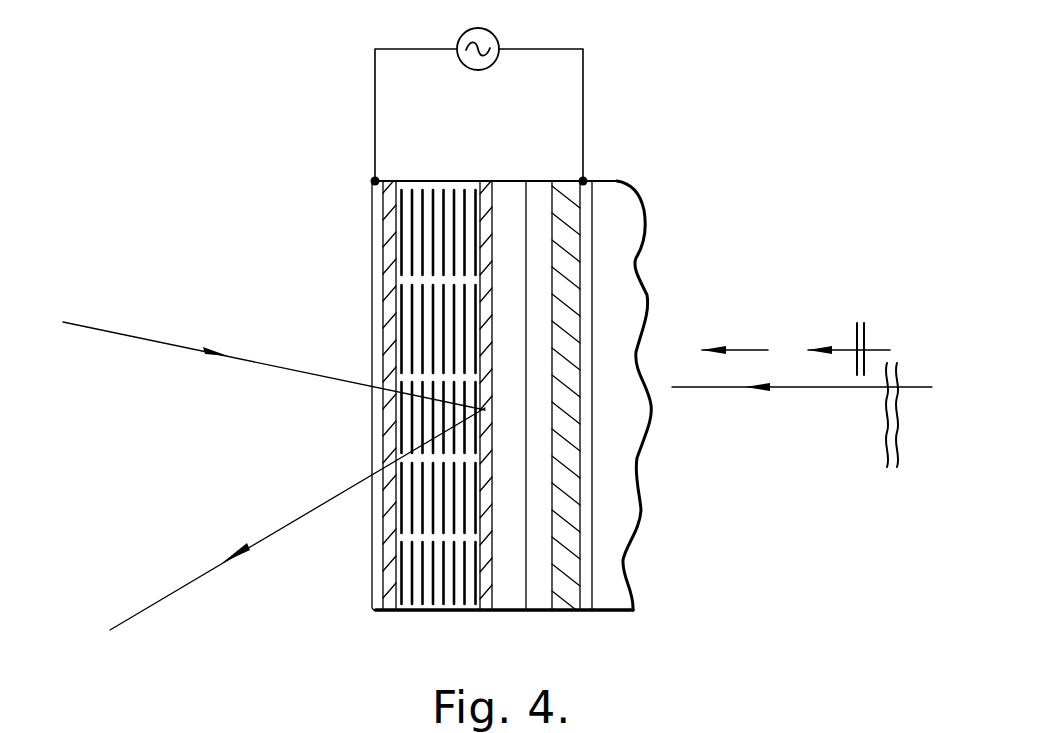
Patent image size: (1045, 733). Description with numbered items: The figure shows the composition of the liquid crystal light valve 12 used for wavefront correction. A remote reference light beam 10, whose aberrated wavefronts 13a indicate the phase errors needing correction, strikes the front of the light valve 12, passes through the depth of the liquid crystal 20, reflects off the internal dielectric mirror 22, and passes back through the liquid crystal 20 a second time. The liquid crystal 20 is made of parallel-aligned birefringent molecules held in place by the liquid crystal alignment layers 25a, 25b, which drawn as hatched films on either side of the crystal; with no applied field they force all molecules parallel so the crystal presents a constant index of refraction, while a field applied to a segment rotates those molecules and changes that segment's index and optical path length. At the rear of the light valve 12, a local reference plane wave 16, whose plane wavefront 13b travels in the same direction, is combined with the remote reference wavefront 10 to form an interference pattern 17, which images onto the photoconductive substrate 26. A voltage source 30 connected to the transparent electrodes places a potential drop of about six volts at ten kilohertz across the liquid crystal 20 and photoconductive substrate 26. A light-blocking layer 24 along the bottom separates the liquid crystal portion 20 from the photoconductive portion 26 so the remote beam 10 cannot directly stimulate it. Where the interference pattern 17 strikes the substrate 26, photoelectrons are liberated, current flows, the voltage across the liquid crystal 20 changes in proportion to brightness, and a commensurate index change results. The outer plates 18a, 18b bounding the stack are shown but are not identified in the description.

The remote reference light beam 10 is at (133, 336).
The liquid crystal light valve 12 is at (640, 121).
The wavefronts 13a is at (888, 481).
The wavefront 13b is at (866, 333).
The local reference plane wave 16 is at (751, 349).
The interference pattern 17 is at (633, 192).
The front glass substrate 18a is at (380, 583).
The rear glass substrate 18b is at (588, 559).
The liquid crystal 20 is at (430, 193).
The internal dielectric mirror 22 is at (506, 165).
The light-blocking layer 24 is at (538, 612).
The liquid crystal alignment layer 25a is at (388, 180).
The liquid crystal alignment layer 25b is at (485, 181).
The photoconductive substrate 26 is at (564, 180).
The voltage source 30 is at (493, 34).